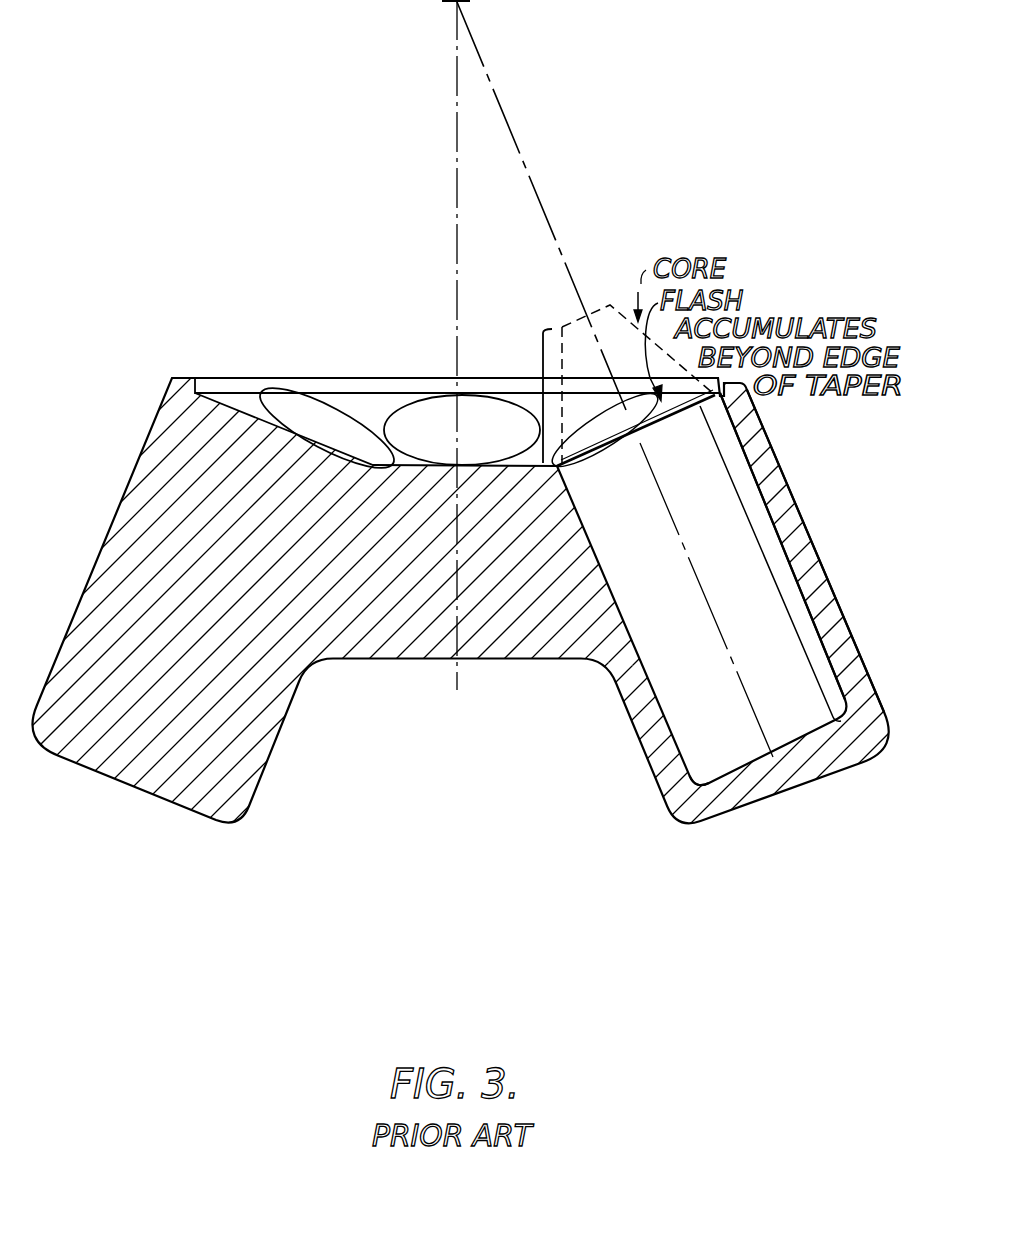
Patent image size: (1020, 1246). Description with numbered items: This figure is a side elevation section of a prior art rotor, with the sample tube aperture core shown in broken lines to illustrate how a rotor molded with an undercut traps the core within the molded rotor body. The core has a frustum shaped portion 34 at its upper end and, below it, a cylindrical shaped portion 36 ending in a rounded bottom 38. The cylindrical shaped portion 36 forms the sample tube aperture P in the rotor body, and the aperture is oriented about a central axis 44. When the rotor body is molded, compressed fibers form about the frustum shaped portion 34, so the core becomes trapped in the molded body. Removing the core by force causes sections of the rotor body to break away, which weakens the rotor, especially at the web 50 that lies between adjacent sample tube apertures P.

The sample tube aperture P is at (654, 577).
The frustum shaped portion 34 is at (543, 463).
The cylindrical shaped portion 36 is at (772, 570).
The rounded bottom 38 is at (690, 783).
The central axis 44 is at (530, 176).
The web 50 is at (392, 466).